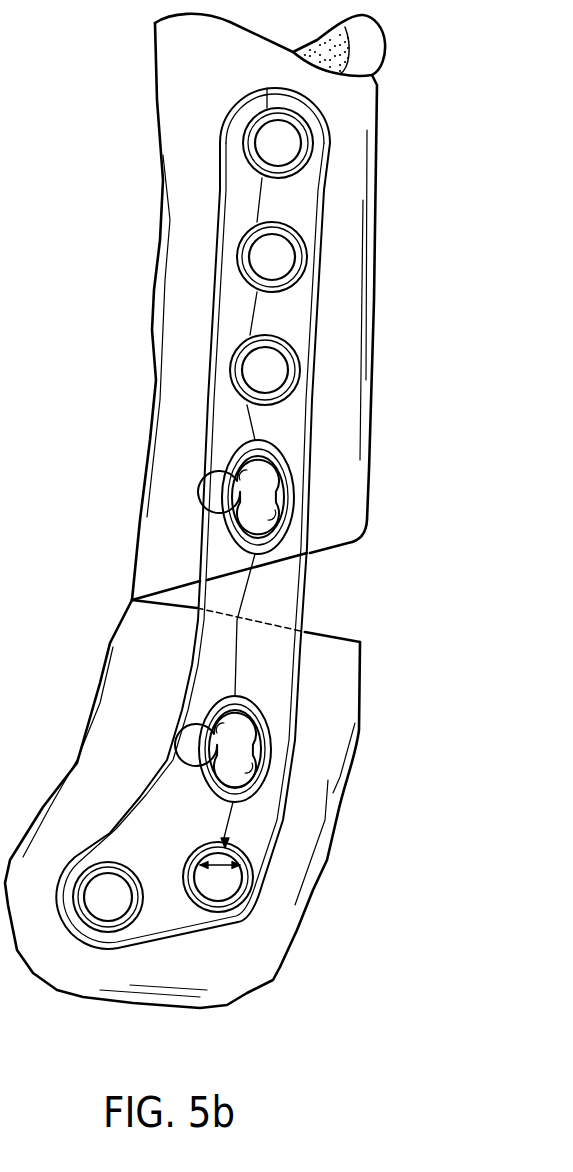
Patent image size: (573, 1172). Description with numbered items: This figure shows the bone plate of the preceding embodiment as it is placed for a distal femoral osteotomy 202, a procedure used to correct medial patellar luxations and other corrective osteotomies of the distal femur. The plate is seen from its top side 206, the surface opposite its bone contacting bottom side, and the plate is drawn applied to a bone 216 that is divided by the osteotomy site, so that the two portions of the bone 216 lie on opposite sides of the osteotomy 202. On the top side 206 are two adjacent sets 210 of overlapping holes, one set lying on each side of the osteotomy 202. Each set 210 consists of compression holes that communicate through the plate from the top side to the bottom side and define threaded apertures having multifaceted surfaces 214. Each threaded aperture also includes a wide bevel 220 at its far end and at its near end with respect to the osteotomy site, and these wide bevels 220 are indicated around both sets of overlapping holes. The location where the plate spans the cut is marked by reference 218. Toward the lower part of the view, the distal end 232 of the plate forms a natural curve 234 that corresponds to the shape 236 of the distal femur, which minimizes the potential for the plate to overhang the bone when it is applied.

The distal femoral osteotomy 202 is at (363, 620).
The top side 206 is at (290, 418).
The set of overlapping holes 210 is at (287, 498).
The multifaceted surface 214 is at (242, 458).
The bone 216 is at (170, 118).
The cut line location 218 is at (312, 630).
The wide bevel 220 is at (258, 443).
The distal end 232 is at (248, 917).
The natural curve 234 is at (273, 875).
The shape of the distal femur 236 is at (323, 867).